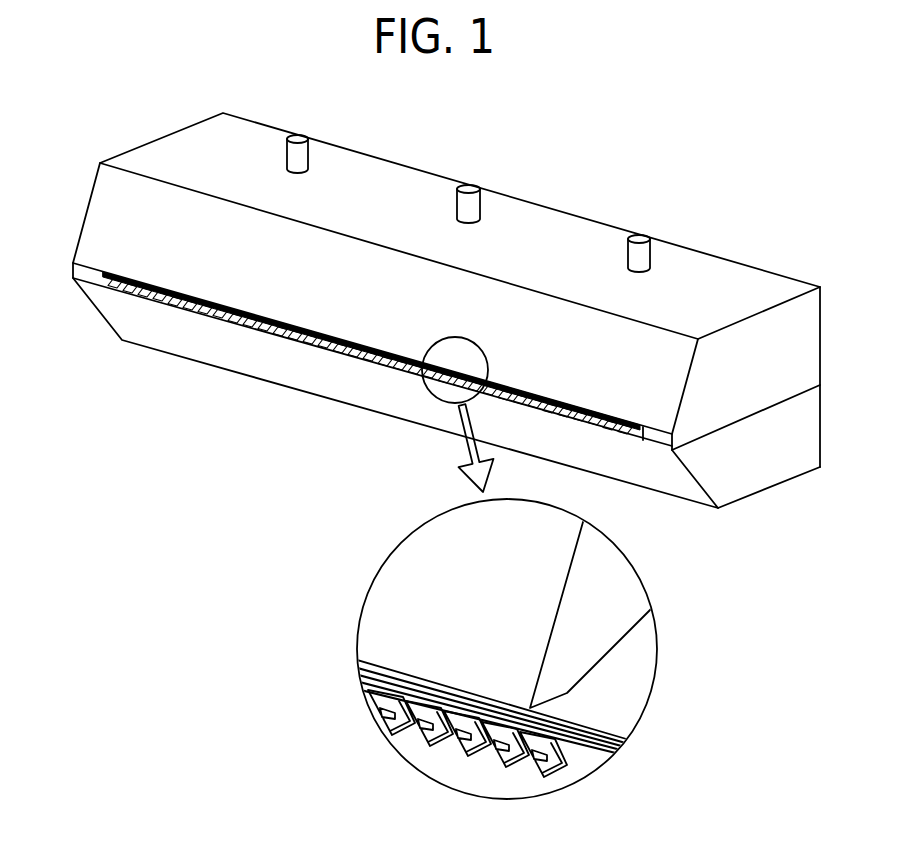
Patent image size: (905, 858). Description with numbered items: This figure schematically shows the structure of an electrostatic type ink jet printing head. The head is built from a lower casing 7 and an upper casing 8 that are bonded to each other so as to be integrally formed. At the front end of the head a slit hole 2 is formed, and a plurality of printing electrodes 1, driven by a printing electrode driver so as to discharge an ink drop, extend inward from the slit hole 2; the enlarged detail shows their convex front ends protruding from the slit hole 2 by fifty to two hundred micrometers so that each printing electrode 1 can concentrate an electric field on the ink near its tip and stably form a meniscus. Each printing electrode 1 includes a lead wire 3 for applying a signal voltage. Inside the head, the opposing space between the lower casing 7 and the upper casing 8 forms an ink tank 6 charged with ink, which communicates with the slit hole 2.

The printing electrode 1 is at (150, 293).
The slit hole 2 is at (118, 287).
The lead wire 3 is at (563, 715).
The ink tank 6 is at (623, 672).
The lower casing 7 is at (758, 474).
The upper casing 8 is at (697, 282).